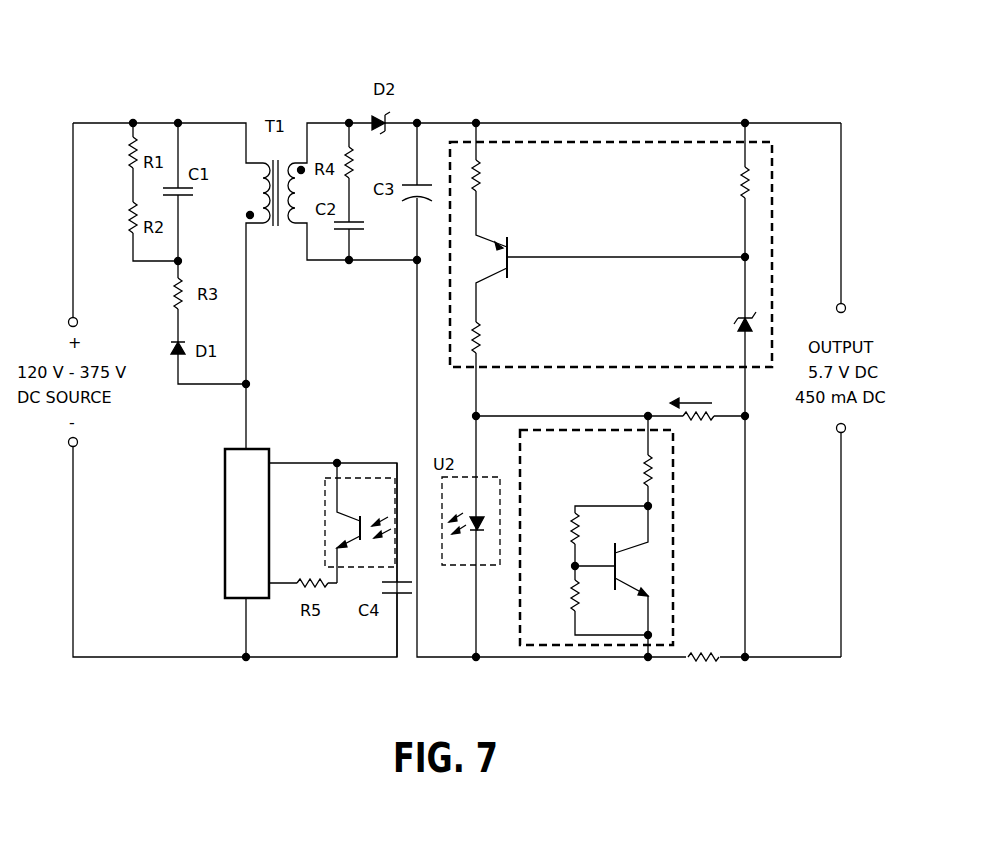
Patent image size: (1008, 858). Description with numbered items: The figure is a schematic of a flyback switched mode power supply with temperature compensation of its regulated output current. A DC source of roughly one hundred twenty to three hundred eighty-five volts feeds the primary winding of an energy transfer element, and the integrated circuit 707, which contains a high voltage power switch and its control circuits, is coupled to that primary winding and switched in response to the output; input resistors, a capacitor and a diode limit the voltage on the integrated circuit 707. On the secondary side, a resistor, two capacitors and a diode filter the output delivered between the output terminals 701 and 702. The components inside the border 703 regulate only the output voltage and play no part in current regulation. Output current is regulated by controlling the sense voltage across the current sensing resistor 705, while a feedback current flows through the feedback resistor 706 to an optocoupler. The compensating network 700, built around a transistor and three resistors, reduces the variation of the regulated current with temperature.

The compensating network 700 is at (674, 527).
The output terminal 701 is at (848, 293).
The output terminal 702 is at (848, 437).
The border 703 is at (637, 146).
The current sensing resistor R13 705 is at (702, 668).
The resistor R9 706 is at (720, 425).
The integrated circuit U1 707 is at (225, 515).